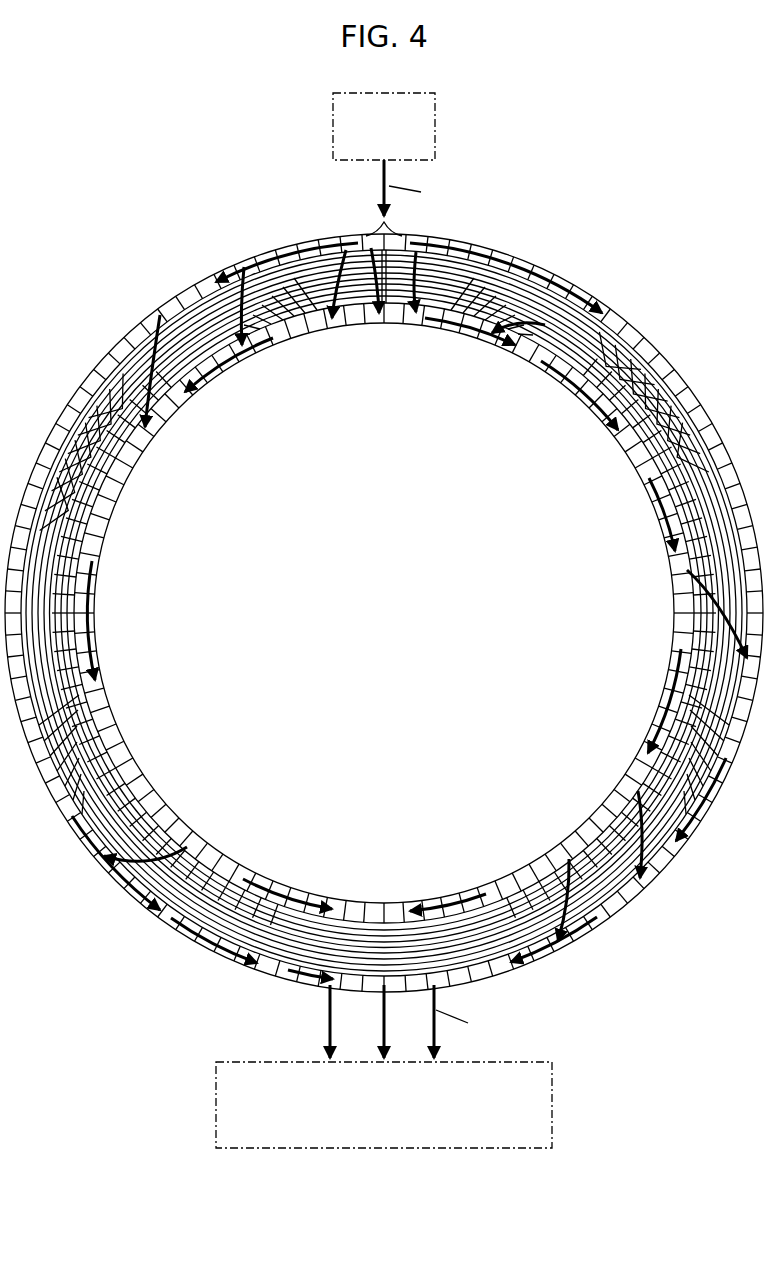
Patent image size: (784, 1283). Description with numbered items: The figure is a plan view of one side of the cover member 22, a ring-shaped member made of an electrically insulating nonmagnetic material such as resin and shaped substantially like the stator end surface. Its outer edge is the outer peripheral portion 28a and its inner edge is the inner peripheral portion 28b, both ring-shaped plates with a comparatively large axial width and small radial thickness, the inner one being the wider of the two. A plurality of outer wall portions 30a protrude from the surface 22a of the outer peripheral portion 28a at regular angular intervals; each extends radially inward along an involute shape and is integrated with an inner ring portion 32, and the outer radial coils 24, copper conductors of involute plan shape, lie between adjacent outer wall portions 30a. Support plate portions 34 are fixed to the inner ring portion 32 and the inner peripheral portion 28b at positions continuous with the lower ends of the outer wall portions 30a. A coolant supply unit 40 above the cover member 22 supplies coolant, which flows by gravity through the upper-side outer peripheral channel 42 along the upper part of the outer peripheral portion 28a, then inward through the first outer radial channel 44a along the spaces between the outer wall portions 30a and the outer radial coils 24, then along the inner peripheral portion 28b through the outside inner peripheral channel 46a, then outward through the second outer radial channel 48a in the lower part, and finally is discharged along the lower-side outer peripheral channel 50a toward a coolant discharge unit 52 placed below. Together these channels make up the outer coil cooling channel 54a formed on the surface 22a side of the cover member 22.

The cover member 22 is at (640, 176).
The surface 22a is at (634, 412).
The outer radial coil 24 is at (198, 303).
The outer peripheral portion 28a is at (700, 405).
The inner peripheral portion 28b is at (672, 592).
The outer wall portion 30a is at (643, 377).
The inner ring portion 32 is at (410, 312).
The inner flow passage cell 34 is at (130, 455).
The coolant supply unit 40 is at (436, 129).
The upper-side outer peripheral channel 42 is at (274, 238).
The first outer radial channel 44a is at (432, 300).
The outside inner peripheral channel 46a is at (217, 375).
The second outer radial channel 48a is at (150, 873).
The lower-side outer peripheral channel 50a is at (697, 810).
The coolant discharge unit 52 is at (553, 1100).
The outer coil cooling channel 54a is at (303, 227).